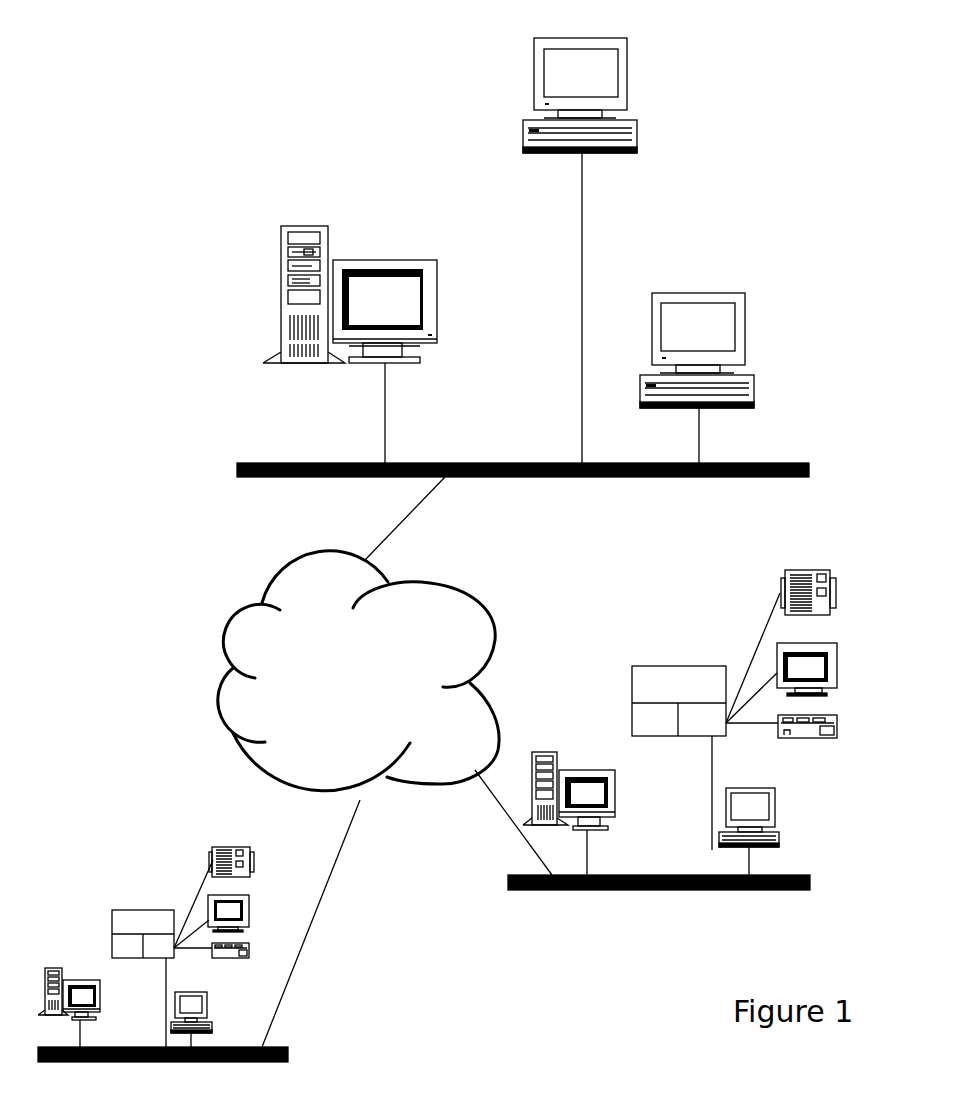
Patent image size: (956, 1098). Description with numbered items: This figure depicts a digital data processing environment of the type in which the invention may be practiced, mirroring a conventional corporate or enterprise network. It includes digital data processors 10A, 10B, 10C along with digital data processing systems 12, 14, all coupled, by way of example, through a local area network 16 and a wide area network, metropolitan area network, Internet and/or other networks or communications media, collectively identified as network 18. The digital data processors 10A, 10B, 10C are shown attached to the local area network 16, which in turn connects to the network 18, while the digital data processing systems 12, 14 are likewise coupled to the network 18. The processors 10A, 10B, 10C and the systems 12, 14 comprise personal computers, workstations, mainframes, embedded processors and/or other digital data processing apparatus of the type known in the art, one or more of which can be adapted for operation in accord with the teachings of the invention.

The digital data processor 10A is at (534, 61).
The digital data processor 10B is at (407, 287).
The digital data processor 10C is at (722, 335).
The digital data processing system 12 is at (80, 829).
The digital data processing system 14 is at (647, 616).
The local area network 16 is at (768, 463).
The network 18 is at (229, 617).